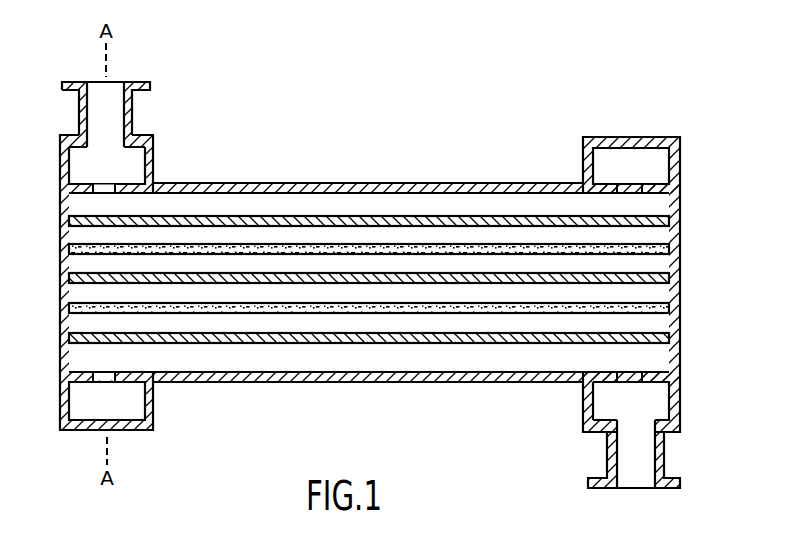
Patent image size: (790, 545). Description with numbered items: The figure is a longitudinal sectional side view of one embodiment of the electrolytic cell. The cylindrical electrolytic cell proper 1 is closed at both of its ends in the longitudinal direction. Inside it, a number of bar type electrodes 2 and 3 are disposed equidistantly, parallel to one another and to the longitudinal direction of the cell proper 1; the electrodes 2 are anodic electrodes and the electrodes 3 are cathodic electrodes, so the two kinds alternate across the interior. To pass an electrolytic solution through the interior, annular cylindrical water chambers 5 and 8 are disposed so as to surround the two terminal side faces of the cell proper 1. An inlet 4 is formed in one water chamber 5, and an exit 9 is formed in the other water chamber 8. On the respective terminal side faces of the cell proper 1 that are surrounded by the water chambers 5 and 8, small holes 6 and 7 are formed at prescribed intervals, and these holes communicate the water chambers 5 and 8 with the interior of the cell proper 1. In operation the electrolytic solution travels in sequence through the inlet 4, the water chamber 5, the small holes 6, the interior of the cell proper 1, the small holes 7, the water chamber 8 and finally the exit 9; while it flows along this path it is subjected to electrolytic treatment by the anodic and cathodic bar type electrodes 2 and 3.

The electrolytic cell proper 1 is at (305, 191).
The anodic bar type electrodes 2 is at (450, 333).
The cathodic bar type electrodes 3 is at (500, 314).
The inlet 4 is at (93, 103).
The water chamber 5 is at (75, 164).
The small holes 6 is at (103, 187).
The small holes 7 is at (630, 184).
The water chamber 8 is at (600, 157).
The exit 9 is at (617, 463).